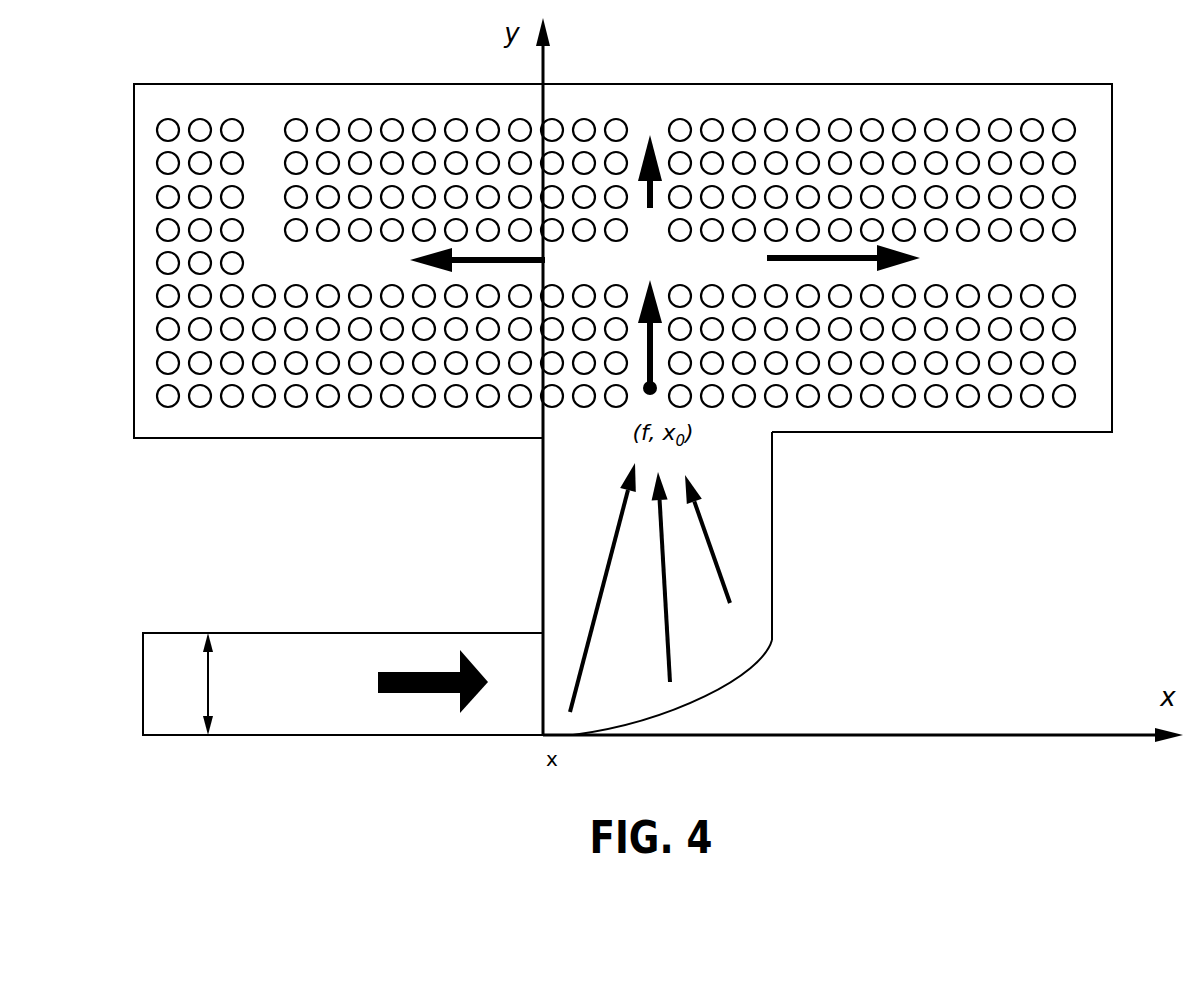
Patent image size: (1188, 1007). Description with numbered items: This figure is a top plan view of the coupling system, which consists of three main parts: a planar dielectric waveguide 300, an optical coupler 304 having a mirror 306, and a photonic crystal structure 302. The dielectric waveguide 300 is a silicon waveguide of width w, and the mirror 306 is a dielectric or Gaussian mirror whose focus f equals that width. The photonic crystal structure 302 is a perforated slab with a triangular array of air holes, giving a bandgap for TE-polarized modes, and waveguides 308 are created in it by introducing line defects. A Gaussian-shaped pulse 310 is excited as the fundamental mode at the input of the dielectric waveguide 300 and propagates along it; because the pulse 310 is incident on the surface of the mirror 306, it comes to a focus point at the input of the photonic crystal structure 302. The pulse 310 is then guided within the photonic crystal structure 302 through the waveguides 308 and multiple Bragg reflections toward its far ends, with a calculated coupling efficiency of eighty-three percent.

The planar dielectric waveguide 300 is at (248, 722).
The photonic crystal structure 302 is at (655, 272).
The optical coupler 304 is at (722, 643).
The mirror 306 is at (757, 682).
The waveguides 308 is at (266, 148).
The Gaussian-shaped pulse 310 is at (427, 261).